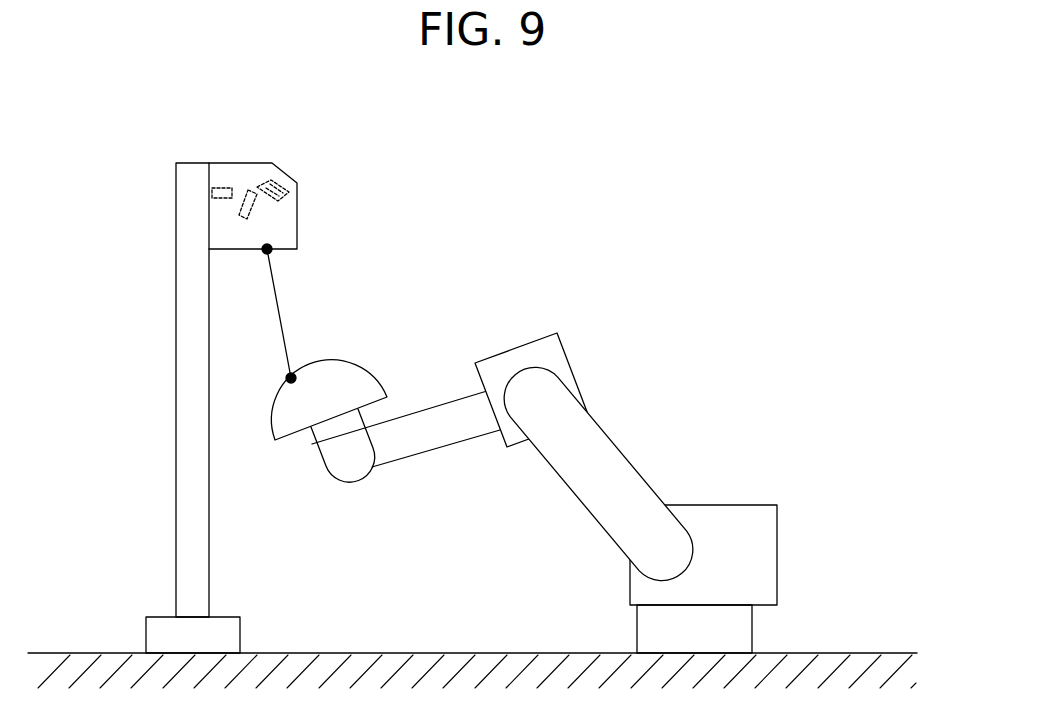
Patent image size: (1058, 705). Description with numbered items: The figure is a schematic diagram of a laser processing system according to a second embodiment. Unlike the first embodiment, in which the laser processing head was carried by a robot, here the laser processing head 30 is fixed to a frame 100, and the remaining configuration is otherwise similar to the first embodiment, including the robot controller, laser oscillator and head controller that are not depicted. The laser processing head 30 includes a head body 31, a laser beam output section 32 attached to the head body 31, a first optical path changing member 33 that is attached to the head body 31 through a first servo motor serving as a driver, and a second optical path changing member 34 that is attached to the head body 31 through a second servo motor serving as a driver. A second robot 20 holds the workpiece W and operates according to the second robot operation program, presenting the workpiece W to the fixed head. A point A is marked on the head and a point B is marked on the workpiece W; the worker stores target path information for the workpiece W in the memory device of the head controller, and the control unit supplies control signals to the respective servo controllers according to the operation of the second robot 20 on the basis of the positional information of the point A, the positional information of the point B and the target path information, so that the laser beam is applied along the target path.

The frame 100 is at (176, 418).
The laser processing head 30 is at (299, 162).
The head body 31 is at (297, 233).
The laser beam output section 32 is at (218, 188).
The first optical path changing member 33 is at (282, 185).
The second optical path changing member 34 is at (256, 214).
The point A is at (265, 253).
The point B is at (288, 380).
The second robot 20 is at (617, 445).
The workpiece W is at (349, 363).